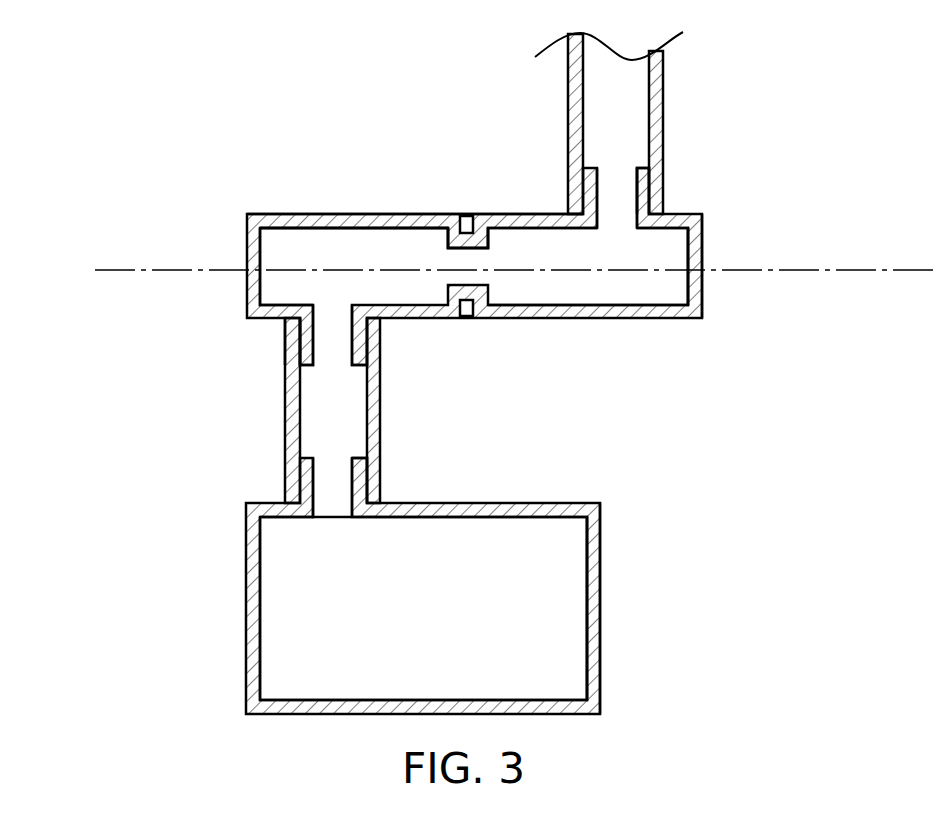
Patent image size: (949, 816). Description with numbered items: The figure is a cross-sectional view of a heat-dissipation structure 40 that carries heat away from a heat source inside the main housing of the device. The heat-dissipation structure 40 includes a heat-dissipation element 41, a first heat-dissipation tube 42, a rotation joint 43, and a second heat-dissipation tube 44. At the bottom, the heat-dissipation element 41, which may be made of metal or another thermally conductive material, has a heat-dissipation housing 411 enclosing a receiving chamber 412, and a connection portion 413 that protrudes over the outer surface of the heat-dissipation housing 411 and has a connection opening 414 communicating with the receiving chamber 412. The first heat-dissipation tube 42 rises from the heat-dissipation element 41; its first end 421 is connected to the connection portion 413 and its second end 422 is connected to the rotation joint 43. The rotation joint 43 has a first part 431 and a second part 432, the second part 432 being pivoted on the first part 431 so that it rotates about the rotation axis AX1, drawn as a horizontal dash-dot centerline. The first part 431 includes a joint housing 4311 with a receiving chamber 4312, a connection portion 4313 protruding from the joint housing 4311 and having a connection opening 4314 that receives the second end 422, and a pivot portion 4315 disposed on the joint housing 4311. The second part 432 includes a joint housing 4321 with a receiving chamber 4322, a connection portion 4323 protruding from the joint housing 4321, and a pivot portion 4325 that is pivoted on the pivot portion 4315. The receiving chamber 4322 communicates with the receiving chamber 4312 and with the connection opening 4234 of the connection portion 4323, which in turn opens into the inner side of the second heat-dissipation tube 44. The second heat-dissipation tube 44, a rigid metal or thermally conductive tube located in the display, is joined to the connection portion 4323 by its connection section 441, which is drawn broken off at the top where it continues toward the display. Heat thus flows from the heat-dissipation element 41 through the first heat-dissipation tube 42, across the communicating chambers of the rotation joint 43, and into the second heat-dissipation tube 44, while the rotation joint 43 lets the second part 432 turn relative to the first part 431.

The heat-dissipation structure 40 is at (80, 43).
The heat-dissipation element 41 is at (620, 646).
The heat-dissipation housing 411 is at (597, 552).
The receiving chamber 412 is at (560, 594).
The connection portion 413 is at (362, 490).
The connection opening 414 is at (360, 470).
The first heat-dissipation tube 42 is at (396, 409).
The first end 421 is at (292, 489).
The second end 422 is at (290, 340).
The rotation joint 43 is at (212, 186).
The first part 431 is at (292, 204).
The joint housing 4311 is at (352, 218).
The receiving chamber 4312 is at (280, 288).
The connection portion 4313 is at (305, 333).
The connection opening 4314 is at (355, 338).
The pivot portion 4315 is at (466, 230).
The pivot portion 4325 is at (483, 240).
The second part 432 is at (710, 237).
The joint housing 4321 is at (651, 310).
The receiving chamber 4322 is at (562, 293).
The connection portion 4323 is at (645, 197).
The inlet opening 4234 is at (618, 192).
The second heat-dissipation tube 44 is at (672, 73).
The connection section 441 is at (666, 107).
The rotation axis AX1 is at (923, 273).